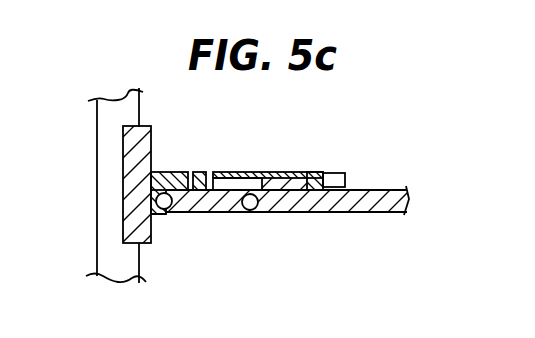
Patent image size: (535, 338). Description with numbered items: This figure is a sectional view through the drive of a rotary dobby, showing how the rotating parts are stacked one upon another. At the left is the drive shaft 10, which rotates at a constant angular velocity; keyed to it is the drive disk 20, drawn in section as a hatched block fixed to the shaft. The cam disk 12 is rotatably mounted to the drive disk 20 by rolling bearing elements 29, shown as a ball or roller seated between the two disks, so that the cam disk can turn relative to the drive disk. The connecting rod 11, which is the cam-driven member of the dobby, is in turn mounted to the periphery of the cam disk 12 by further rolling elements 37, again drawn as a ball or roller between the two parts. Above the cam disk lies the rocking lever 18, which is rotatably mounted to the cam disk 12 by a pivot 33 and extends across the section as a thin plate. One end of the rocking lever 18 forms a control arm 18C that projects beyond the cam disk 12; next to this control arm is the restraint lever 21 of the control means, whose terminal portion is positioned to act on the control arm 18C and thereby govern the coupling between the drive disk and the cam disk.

The drive shaft 10 is at (112, 108).
The connecting rod 11 is at (388, 212).
The cam disk 12 is at (223, 212).
The rocking lever 18 is at (265, 172).
The control arm 18C is at (321, 166).
The drive disk 20 is at (170, 172).
The restraint lever 21 is at (346, 180).
The rolling bearing elements 29 is at (172, 214).
The pivot 33 is at (208, 172).
The rolling elements 37 is at (265, 212).